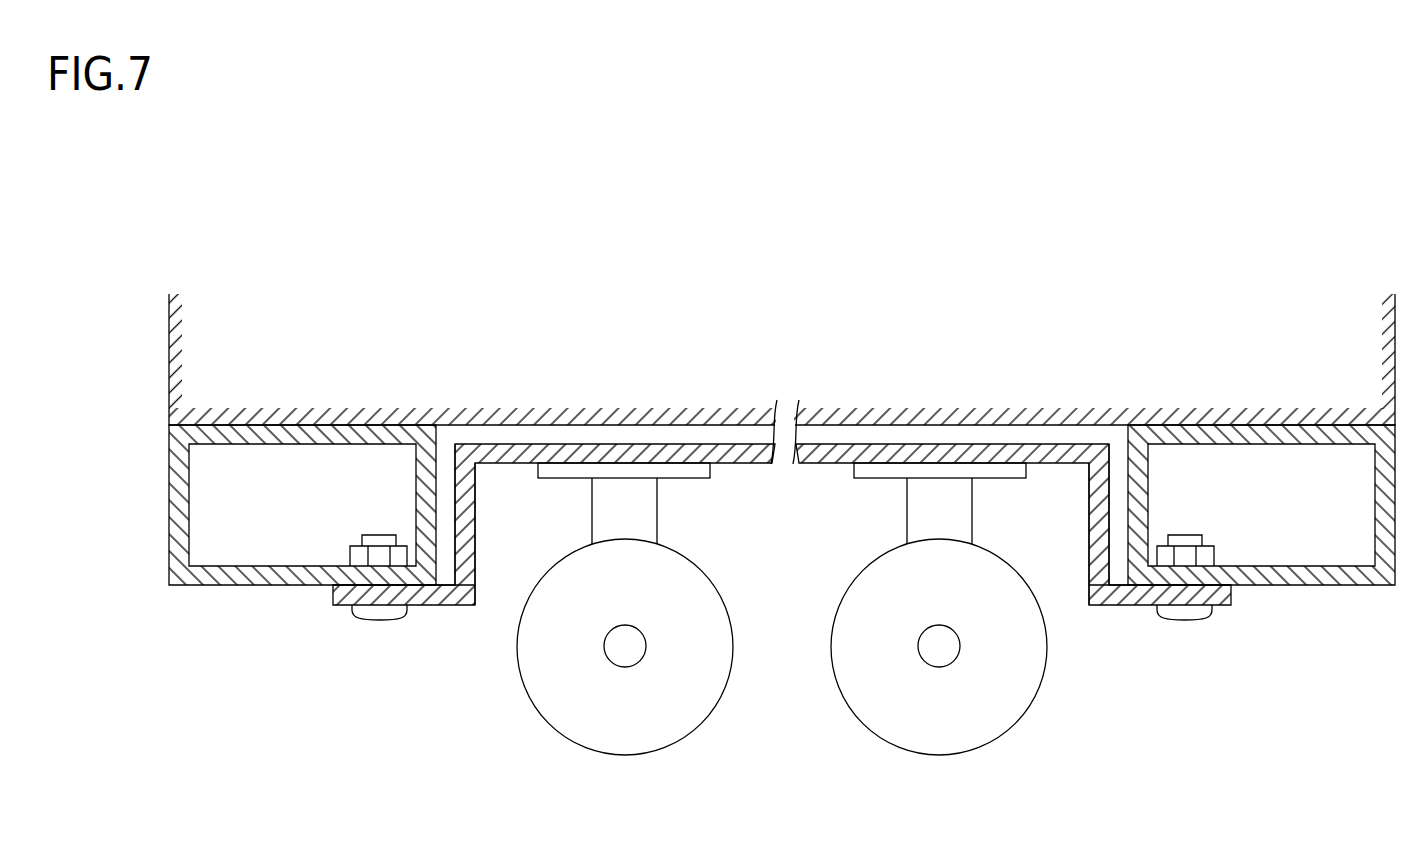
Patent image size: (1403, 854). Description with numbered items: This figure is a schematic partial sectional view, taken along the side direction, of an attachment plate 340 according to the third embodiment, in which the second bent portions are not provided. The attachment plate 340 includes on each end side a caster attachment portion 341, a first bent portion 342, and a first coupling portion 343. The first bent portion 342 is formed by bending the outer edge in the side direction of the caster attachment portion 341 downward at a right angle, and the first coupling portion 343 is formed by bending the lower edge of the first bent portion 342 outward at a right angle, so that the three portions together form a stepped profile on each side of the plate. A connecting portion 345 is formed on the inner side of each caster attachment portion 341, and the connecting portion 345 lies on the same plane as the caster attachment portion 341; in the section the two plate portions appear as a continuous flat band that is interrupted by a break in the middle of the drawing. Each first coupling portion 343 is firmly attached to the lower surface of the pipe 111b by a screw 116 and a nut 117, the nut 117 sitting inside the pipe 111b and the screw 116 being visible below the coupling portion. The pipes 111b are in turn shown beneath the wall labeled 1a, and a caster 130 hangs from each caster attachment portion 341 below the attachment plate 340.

The apparatus main body 1a is at (169, 333).
The pipe 111b is at (169, 487).
The screw 116 is at (370, 622).
The nut 117 is at (352, 558).
The caster 130 is at (536, 733).
The attachment plate 340 is at (782, 528).
The caster attachment portion 341 is at (505, 460).
The first bent portion 342 is at (475, 527).
The first coupling portion 343 is at (430, 606).
The connecting portion 345 is at (735, 462).